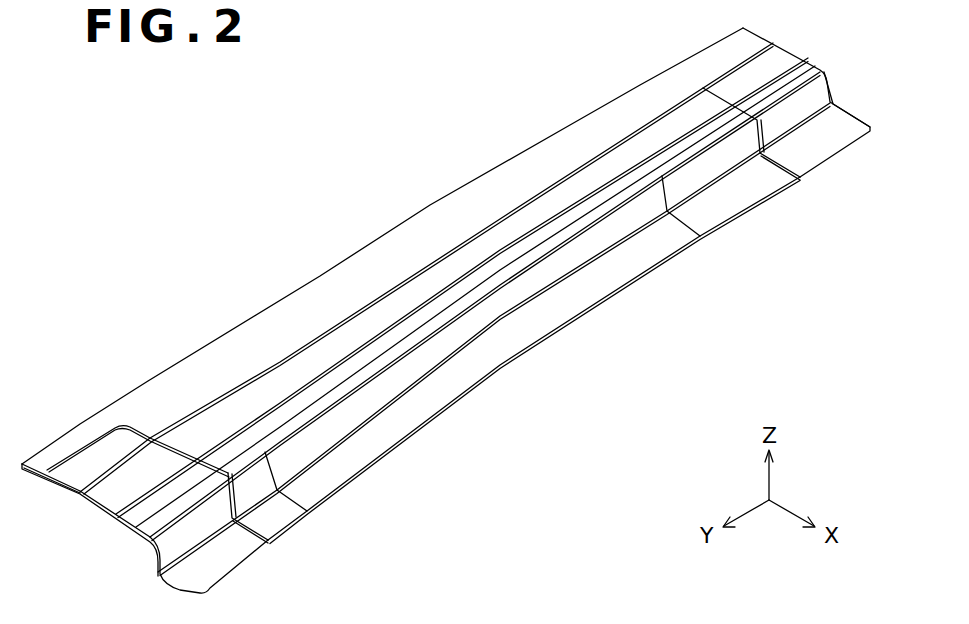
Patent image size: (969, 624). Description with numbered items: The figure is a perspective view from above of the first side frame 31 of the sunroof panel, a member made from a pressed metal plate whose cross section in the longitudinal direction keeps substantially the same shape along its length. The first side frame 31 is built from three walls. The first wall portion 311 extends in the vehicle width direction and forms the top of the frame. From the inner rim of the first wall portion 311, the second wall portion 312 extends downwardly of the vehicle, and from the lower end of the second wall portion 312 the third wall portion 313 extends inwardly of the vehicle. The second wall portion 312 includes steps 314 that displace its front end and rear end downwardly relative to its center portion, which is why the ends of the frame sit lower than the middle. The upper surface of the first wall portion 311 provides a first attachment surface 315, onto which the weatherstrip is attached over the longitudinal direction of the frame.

The first side frame 31 is at (156, 155).
The first wall portion 311 is at (440, 214).
The second wall portion 312 is at (438, 347).
The third wall portion 313 is at (549, 314).
The steps 314 is at (766, 119).
The first attachment surface 315 is at (334, 383).